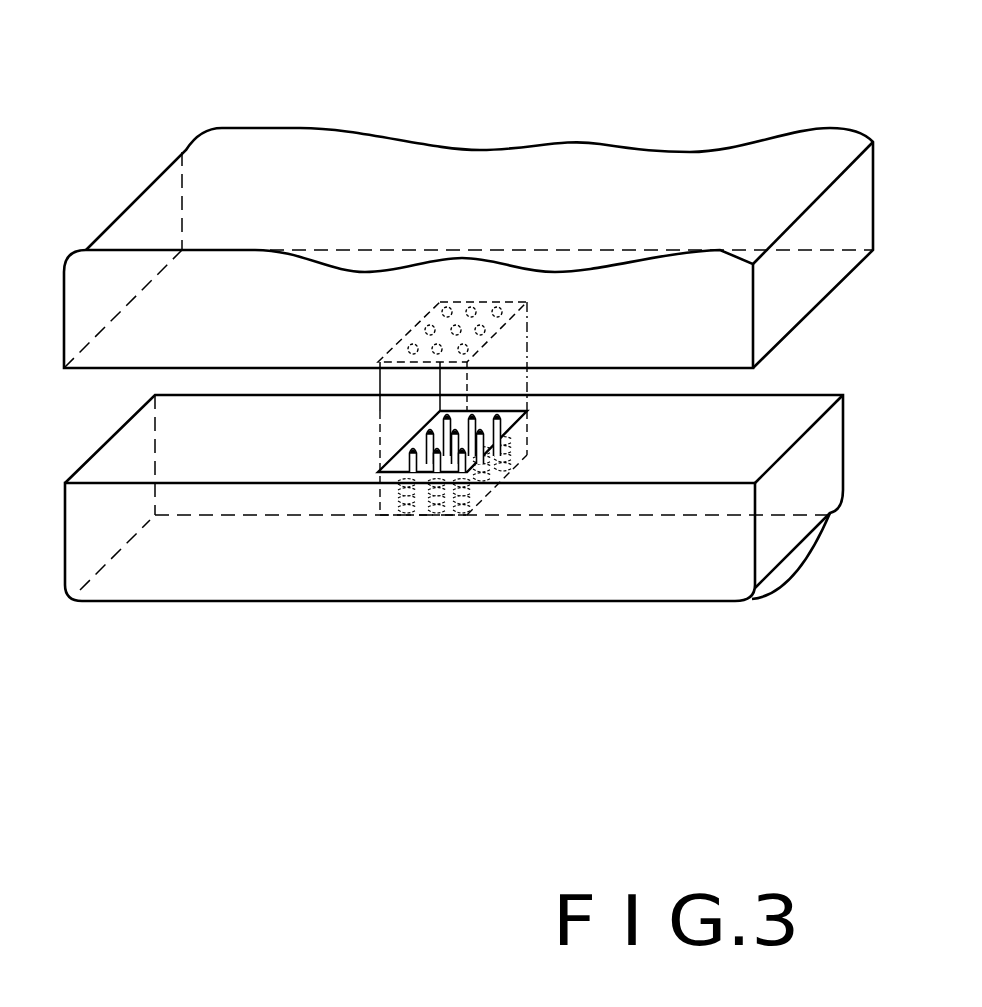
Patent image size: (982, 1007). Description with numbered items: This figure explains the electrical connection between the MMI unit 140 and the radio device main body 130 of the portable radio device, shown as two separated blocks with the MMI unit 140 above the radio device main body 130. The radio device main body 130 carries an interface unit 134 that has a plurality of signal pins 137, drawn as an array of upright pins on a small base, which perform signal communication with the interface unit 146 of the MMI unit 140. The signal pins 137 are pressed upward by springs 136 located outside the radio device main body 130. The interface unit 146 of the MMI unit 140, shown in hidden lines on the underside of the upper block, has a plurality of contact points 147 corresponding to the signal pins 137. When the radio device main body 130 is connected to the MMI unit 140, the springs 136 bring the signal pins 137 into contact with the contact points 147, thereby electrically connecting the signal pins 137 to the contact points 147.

The MMI unit 140 is at (258, 155).
The interface unit 146 is at (532, 323).
The contact points 147 is at (428, 318).
The radio device main body 130 is at (208, 568).
The signal pins 137 is at (392, 470).
The springs 136 is at (437, 515).
The interface unit 134 is at (510, 425).